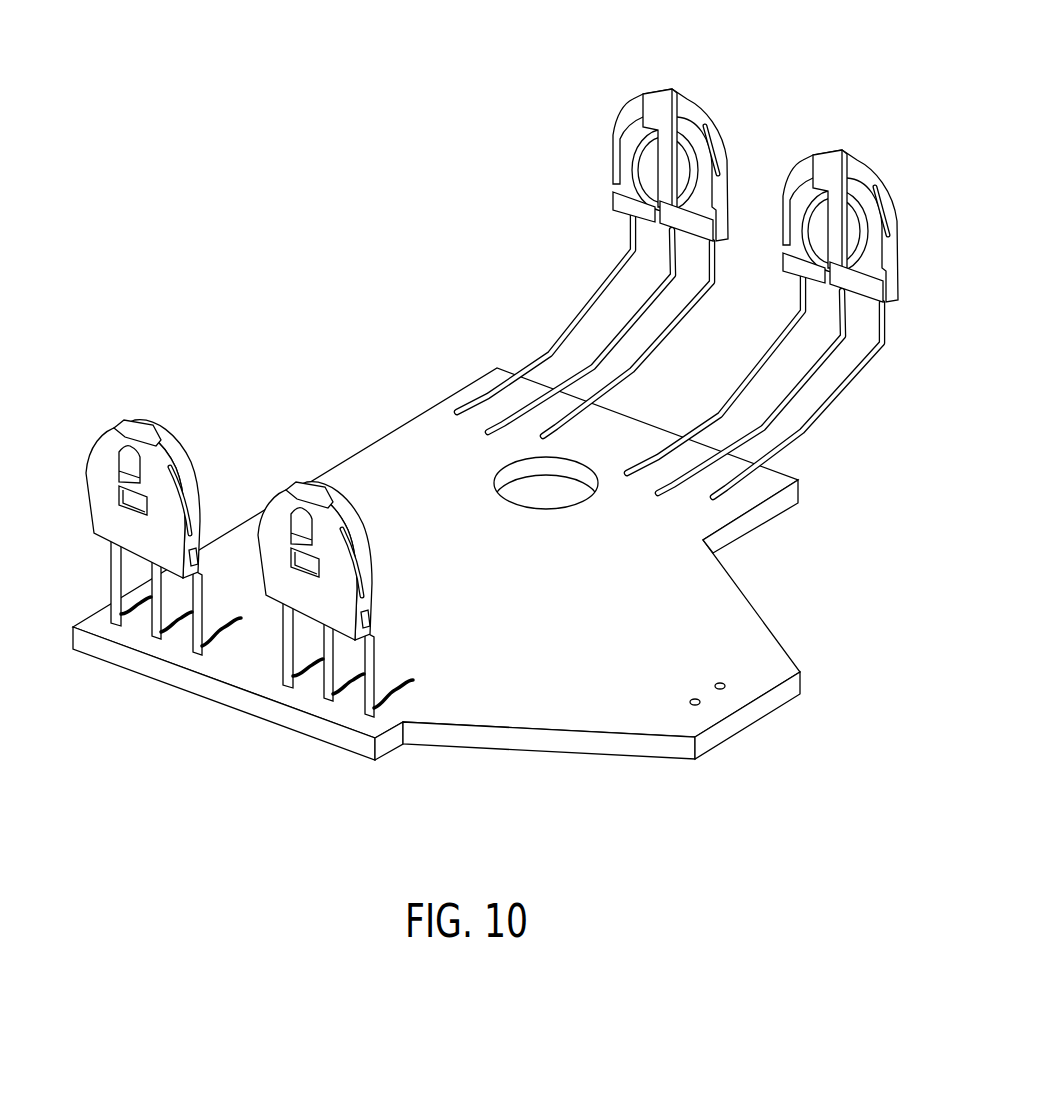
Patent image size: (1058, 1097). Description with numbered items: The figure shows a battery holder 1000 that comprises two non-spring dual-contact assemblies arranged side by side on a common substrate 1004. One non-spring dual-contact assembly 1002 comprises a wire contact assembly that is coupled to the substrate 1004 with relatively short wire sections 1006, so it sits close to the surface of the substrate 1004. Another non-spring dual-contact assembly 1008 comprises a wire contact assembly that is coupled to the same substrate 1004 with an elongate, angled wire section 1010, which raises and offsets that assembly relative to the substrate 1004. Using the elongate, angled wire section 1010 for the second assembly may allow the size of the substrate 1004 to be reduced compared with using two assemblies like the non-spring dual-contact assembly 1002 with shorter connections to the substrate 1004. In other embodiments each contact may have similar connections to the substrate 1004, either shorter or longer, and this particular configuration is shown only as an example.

The battery holder 1000 is at (468, 386).
The non-spring dual-contact assembly 1002 is at (170, 416).
The substrate 1004 is at (483, 562).
The short wire sections 1006 is at (112, 568).
The non-spring dual-contact assembly 1008 is at (680, 75).
The elongate, angled wire section 1010 is at (670, 337).